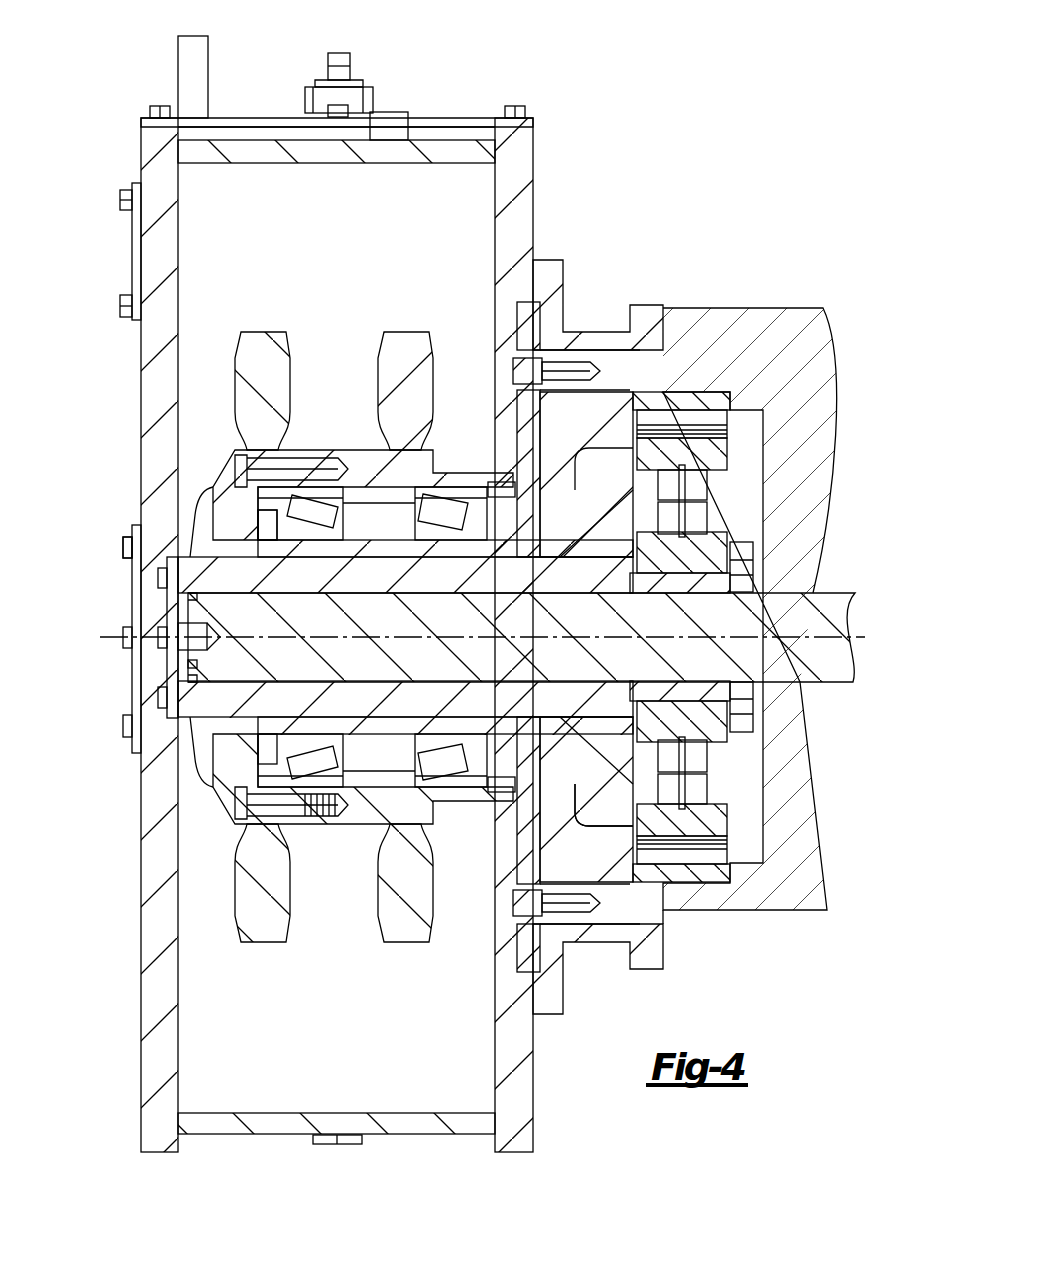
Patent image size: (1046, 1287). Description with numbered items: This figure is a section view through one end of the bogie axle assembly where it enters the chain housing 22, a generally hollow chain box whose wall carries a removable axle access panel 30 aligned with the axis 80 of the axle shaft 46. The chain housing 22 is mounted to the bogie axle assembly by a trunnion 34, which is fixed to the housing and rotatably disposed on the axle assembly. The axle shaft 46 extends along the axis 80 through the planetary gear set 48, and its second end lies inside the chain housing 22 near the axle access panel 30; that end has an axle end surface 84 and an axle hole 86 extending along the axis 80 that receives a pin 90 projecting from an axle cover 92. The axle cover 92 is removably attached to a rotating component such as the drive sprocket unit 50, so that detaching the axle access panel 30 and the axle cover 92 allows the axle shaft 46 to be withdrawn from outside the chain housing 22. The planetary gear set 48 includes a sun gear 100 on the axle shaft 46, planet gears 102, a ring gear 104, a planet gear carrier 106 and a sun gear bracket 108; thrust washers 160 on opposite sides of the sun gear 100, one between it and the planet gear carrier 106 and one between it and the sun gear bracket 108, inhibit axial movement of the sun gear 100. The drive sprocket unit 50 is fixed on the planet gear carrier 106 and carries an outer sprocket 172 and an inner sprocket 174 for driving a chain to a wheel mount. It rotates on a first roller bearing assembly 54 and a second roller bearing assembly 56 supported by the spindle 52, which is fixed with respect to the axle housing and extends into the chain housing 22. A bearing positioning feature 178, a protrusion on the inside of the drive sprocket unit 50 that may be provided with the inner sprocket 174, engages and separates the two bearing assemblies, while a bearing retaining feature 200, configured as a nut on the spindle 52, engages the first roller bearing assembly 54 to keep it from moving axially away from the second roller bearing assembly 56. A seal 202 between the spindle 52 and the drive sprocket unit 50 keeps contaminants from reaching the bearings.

The chain housing 22 is at (152, 380).
The axle access panel 30 is at (135, 527).
The trunnion 34 is at (563, 262).
The axle shaft 46 is at (820, 654).
The planetary gear set 48 is at (657, 601).
The drive sprocket unit 50 is at (288, 662).
The spindle 52 is at (412, 730).
The first roller bearing assembly 54 is at (293, 748).
The second roller bearing assembly 56 is at (463, 530).
The axis 80 is at (525, 645).
The axle end surface 84 is at (183, 663).
The axle hole 86 is at (200, 666).
The pin 90 is at (188, 633).
The axle cover 92 is at (167, 595).
The sun gear 100 is at (690, 585).
The planet gears 102 is at (740, 438).
The ring gear 104 is at (706, 415).
The planet gear carrier 106 is at (617, 835).
The sun gear bracket 108 is at (750, 700).
The thrust washer 160 is at (632, 583).
The outer sprocket 172 is at (262, 943).
The inner sprocket 174 is at (400, 943).
The bearing positioning feature 178 is at (367, 765).
The bearing retaining feature 200 is at (262, 520).
The seal 202 is at (480, 783).